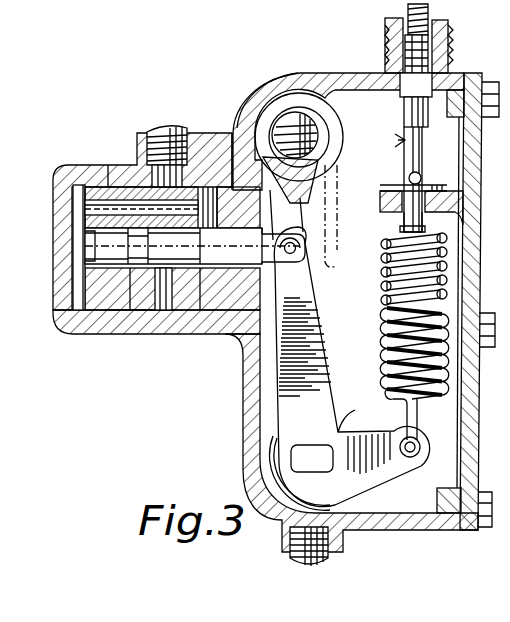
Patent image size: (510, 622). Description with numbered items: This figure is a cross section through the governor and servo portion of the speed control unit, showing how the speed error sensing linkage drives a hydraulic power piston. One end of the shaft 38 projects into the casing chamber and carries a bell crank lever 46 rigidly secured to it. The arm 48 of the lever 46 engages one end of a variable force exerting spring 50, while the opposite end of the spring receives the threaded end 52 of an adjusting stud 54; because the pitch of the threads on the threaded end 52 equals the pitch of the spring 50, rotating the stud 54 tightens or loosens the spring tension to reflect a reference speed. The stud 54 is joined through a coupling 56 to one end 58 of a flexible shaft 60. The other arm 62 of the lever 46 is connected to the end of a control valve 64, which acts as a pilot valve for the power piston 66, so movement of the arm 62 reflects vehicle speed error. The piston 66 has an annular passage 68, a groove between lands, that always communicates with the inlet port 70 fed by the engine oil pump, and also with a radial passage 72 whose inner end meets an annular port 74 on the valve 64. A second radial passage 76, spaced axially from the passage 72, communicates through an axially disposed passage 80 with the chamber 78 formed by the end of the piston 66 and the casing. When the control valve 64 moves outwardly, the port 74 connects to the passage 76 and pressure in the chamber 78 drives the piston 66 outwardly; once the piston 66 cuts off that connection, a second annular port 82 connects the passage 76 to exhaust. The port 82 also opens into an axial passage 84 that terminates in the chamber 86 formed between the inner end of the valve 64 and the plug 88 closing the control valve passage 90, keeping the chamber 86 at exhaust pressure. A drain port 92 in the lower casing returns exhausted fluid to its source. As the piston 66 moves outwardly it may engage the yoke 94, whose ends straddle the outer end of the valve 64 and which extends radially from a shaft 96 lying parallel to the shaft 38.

The shaft 38 is at (315, 460).
The bell crank lever 46 is at (330, 386).
The arm 48 is at (397, 458).
The variable force exerting spring 50 is at (387, 342).
The threaded end 52 is at (387, 272).
The adjusting stud 54 is at (417, 224).
The coupling 56 is at (386, 139).
The end of flexible shaft 58 is at (418, 118).
The flexible shaft 60 is at (395, 16).
The arm 62 is at (312, 325).
The control valve 64 is at (277, 260).
The power piston 66 is at (98, 300).
The annular passage 68 is at (120, 308).
The inlet port 70 is at (152, 176).
The radial passage 72 is at (165, 310).
The annular port 74 is at (212, 289).
The second radial passage 76 is at (232, 190).
The chamber 78 is at (78, 212).
The axially disposed passage 80 is at (108, 185).
The second annular port 82 is at (234, 241).
The axial passage 84 is at (126, 289).
The chamber 86 is at (95, 240).
The plug 88 is at (85, 250).
The control valve passage 90 is at (90, 262).
The drain port 92 is at (332, 542).
The yoke 94 is at (305, 187).
The shaft 96 is at (318, 138).